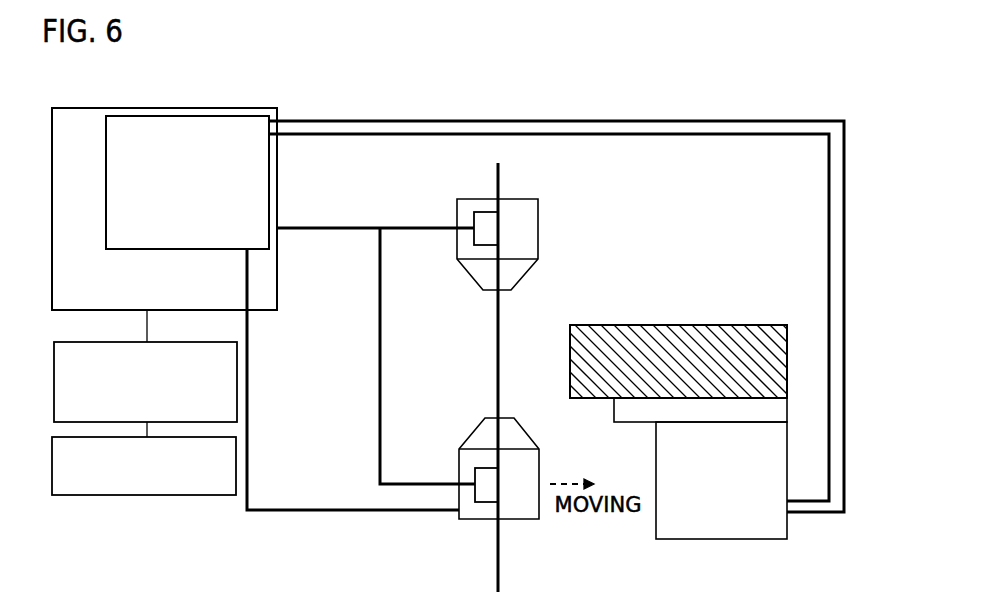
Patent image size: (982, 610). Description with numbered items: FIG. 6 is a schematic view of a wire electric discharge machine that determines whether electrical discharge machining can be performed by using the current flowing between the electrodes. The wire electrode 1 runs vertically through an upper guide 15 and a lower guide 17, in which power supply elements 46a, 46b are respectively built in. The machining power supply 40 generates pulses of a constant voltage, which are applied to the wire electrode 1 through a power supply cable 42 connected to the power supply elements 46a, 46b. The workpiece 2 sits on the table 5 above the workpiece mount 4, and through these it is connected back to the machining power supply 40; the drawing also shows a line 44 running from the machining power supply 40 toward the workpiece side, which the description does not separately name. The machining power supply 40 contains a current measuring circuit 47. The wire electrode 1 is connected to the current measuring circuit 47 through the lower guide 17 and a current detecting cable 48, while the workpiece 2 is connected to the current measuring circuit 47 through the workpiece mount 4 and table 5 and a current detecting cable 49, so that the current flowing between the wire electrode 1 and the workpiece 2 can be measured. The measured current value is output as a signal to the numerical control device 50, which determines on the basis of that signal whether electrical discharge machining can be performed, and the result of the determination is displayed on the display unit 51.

The wire electrode 1 is at (497, 346).
The workpiece 2 is at (680, 325).
The workpiece mount 4 is at (690, 540).
The table 5 is at (616, 424).
The upper guide 15 is at (538, 204).
The lower guide 17 is at (536, 520).
The machining power supply 40 is at (105, 108).
The power supply cable 42 is at (362, 228).
The power line to workpiece 44 is at (829, 185).
The power supply element 46a is at (487, 212).
The power supply element 46b is at (480, 502).
The current measuring circuit 47 is at (202, 116).
The current detecting cable 48 is at (348, 510).
The current detecting cable 49 is at (815, 512).
The numerical control device 50 is at (80, 342).
The display unit 51 is at (80, 495).